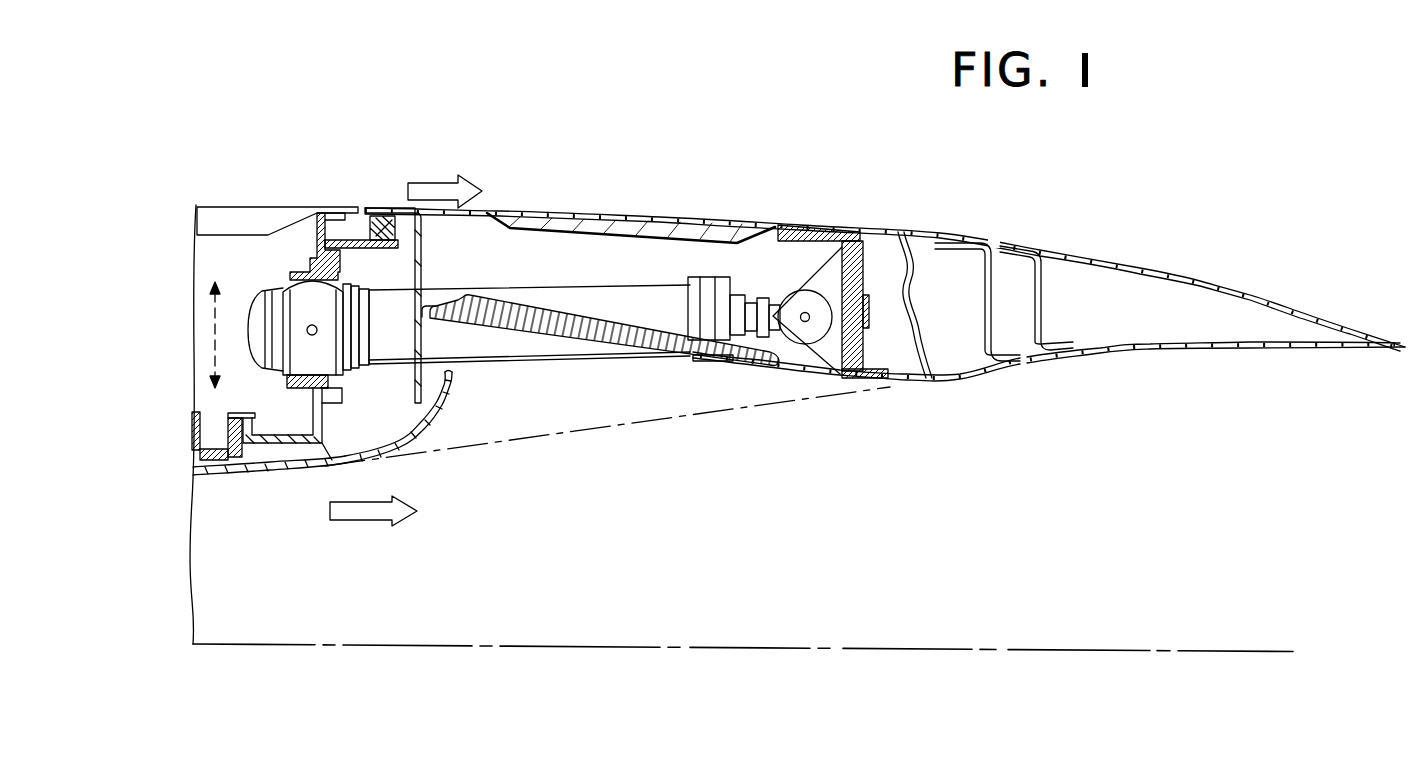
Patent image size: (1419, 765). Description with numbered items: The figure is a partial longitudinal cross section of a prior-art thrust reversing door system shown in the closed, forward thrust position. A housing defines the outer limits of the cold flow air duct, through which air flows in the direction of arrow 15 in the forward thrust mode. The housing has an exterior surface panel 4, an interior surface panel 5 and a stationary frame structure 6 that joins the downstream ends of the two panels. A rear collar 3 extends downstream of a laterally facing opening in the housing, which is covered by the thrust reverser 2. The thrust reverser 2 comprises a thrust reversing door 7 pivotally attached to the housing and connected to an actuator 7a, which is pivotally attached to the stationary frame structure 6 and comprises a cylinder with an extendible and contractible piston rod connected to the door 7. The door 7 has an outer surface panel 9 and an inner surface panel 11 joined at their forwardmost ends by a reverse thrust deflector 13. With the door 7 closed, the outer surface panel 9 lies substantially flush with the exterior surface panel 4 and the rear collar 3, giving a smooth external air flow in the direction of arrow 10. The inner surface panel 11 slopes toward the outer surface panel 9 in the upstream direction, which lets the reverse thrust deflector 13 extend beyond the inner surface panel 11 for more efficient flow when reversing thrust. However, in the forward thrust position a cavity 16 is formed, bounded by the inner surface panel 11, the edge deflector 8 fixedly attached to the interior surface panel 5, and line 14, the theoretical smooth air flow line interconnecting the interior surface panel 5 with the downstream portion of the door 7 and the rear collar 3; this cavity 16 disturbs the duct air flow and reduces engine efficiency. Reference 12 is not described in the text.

The thrust reverser 2 is at (806, 201).
The rear collar 3 is at (1126, 312).
The exterior surface panel 4 is at (243, 218).
The interior surface panel 5 is at (227, 466).
The stationary frame structure 6 is at (318, 418).
The thrust reversing door 7 is at (617, 238).
The actuator 7a is at (558, 302).
The edge deflector 8 is at (438, 408).
The outer surface panel 9 is at (712, 228).
The arrow 10 is at (417, 187).
The inner surface panel 11 is at (666, 357).
The bulkhead 12 is at (856, 352).
The reverse thrust deflector 13 is at (414, 377).
The line 14 is at (730, 408).
The arrow 15 is at (363, 510).
The cavity 16 is at (553, 414).